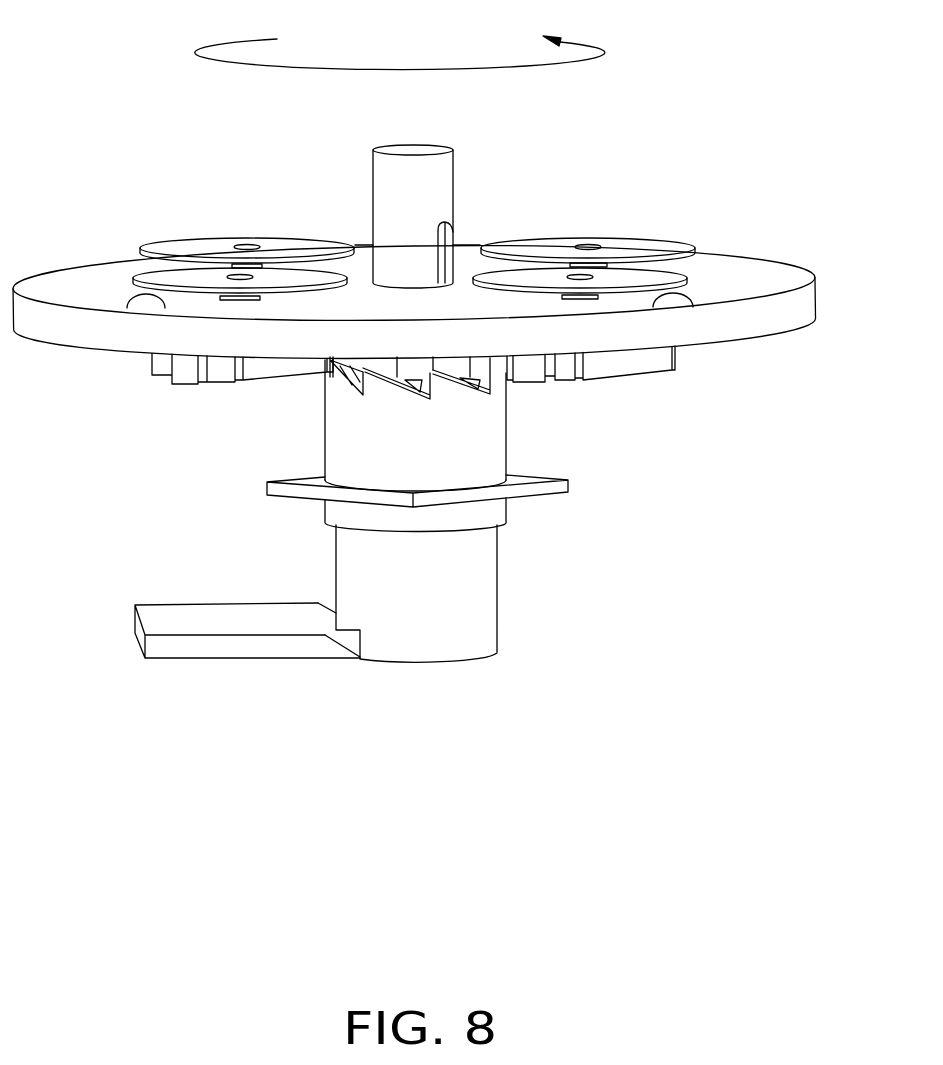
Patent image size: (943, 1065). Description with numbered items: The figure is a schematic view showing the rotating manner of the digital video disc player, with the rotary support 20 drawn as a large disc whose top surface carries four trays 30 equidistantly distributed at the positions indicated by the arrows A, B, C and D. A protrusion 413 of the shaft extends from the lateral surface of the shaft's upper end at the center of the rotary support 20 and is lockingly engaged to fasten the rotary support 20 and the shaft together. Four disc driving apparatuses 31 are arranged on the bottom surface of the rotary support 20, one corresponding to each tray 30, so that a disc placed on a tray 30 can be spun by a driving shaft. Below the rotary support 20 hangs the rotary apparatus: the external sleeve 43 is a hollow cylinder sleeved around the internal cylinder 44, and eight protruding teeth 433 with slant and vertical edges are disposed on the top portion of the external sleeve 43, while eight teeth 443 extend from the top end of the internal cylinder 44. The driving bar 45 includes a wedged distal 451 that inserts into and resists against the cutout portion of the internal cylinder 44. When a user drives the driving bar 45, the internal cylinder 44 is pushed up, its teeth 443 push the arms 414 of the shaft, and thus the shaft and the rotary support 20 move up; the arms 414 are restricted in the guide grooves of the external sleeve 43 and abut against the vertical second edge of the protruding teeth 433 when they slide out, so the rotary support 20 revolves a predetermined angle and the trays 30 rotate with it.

The rotary support 20 is at (777, 313).
The tray 30 is at (447, 224).
The disc driving apparatus 31 is at (643, 362).
The protrusion 413 is at (387, 150).
The arm 414 is at (341, 371).
The protruding tooth 433 is at (402, 382).
The tooth 443 is at (420, 386).
The external sleeve 43 is at (419, 444).
The internal cylinder 44 is at (460, 607).
The driving bar 45 is at (209, 590).
The wedged distal 451 is at (330, 612).
The arrow A is at (277, 244).
The arrow B is at (540, 245).
The arrow C is at (682, 272).
The arrow D is at (137, 278).